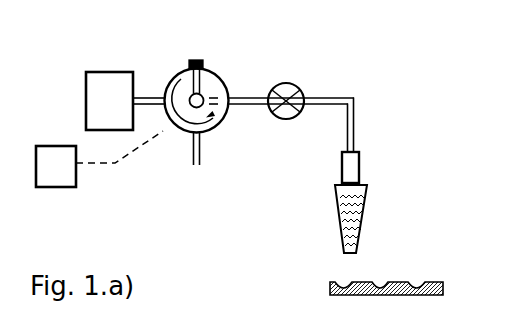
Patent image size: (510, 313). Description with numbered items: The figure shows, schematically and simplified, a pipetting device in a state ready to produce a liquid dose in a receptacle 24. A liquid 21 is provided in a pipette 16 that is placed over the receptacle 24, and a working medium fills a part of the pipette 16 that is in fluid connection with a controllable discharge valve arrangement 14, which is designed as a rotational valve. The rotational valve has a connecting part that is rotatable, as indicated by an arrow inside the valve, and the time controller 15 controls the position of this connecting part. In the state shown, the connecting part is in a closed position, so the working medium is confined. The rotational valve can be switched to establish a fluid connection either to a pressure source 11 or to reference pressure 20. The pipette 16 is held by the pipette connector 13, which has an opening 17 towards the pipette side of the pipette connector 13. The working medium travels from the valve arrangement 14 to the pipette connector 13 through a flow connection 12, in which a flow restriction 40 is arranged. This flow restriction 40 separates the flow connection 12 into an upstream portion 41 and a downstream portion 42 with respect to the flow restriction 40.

The pressure source 11 is at (100, 114).
The time controller 15 is at (43, 180).
The controllable discharge valve arrangement 14 is at (175, 130).
The reference pressure 20 is at (185, 216).
The upstream portion 41 is at (239, 86).
The flow restriction 40 is at (279, 83).
The downstream portion 42 is at (311, 88).
The flow connection 12 is at (333, 97).
The pipette connector 13 is at (360, 164).
The opening 17 is at (328, 176).
The pipette 16 is at (366, 202).
The liquid 21 is at (366, 222).
The receptacle 24 is at (348, 282).